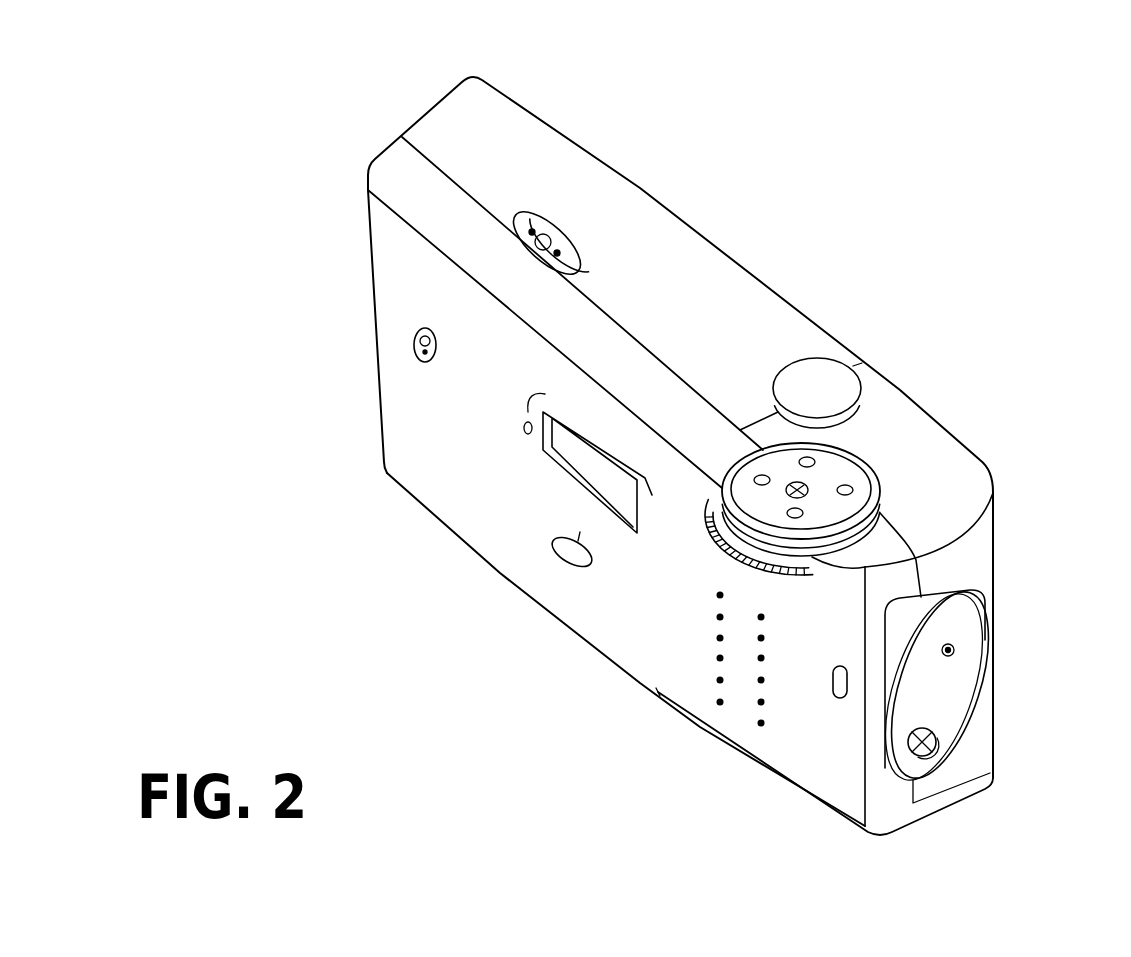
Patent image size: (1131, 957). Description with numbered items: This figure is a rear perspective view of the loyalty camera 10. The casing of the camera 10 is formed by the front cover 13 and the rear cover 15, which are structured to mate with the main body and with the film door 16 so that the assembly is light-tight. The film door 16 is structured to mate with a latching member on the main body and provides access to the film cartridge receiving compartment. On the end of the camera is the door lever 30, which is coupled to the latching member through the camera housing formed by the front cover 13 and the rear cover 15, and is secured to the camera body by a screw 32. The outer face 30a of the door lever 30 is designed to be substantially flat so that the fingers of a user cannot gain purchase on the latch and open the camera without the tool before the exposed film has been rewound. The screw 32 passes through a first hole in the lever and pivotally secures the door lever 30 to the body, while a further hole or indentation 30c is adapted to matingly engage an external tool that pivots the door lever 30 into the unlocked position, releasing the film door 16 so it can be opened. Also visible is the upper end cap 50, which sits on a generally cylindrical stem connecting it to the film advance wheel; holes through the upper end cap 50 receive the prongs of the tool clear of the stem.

The camera 10 is at (268, 86).
The front cover 13 is at (713, 243).
The rear cover 15 is at (397, 408).
The film door 16 is at (755, 765).
The door lever 30 is at (993, 643).
The outer face 30a is at (918, 706).
The hole or indentations 30c is at (948, 645).
The screw 32 is at (906, 743).
The upper end cap 50 is at (750, 498).